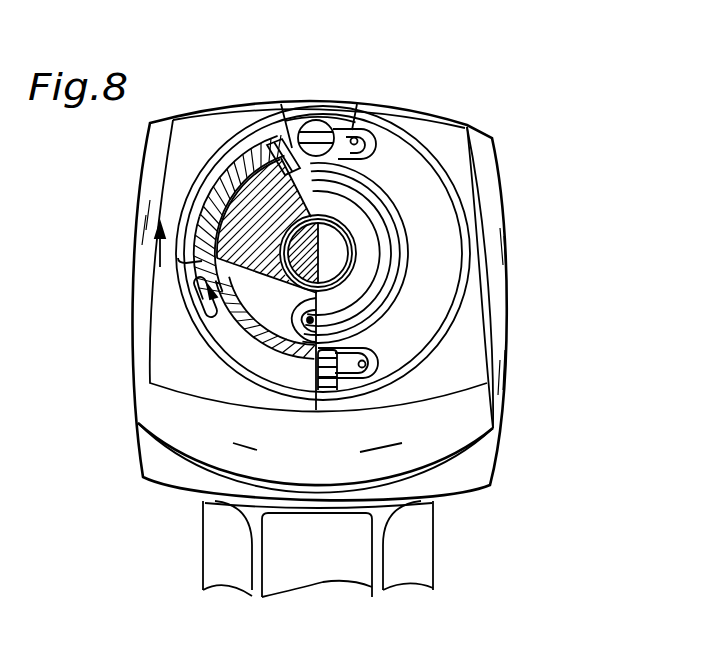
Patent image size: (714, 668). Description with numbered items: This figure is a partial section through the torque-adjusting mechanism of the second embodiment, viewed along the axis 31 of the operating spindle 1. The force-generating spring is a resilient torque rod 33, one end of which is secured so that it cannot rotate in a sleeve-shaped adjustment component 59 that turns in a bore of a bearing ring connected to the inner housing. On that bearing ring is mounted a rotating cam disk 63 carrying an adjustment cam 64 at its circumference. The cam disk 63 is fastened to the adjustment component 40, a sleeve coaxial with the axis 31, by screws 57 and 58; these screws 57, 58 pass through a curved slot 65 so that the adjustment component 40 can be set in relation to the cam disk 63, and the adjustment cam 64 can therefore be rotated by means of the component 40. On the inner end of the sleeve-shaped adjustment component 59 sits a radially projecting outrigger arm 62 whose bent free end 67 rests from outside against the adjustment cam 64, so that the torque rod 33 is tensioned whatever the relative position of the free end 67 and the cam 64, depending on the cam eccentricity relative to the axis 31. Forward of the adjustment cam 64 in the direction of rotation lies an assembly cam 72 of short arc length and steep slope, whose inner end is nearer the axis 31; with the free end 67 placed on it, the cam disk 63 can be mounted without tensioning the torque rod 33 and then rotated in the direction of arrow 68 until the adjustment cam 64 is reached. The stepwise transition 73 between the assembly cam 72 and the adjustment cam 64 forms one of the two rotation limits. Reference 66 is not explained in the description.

The operating spindle 1 is at (338, 263).
The axis 31 is at (322, 249).
The resilient torque rod 33 is at (312, 320).
The adjustment component 40 is at (422, 140).
The screw 57 is at (318, 122).
The screw 58 is at (328, 378).
The sleeve-shaped adjustment component 59 is at (300, 340).
The outrigger arm 62 is at (257, 310).
The cam disk 63 is at (262, 202).
The adjustment cam 64 is at (290, 357).
The curved slot 65 is at (357, 137).
The slot 66 is at (352, 360).
The bent free end 67 is at (196, 293).
The arrow 68 is at (160, 248).
The assembly cam 72 is at (235, 182).
The stepwise transition 73 is at (188, 272).